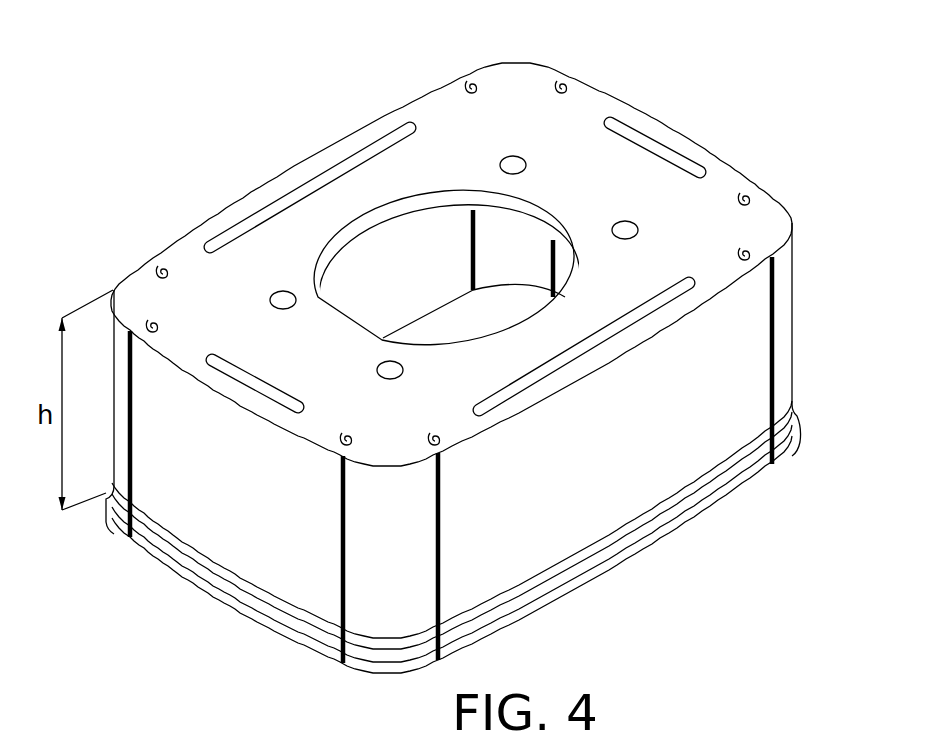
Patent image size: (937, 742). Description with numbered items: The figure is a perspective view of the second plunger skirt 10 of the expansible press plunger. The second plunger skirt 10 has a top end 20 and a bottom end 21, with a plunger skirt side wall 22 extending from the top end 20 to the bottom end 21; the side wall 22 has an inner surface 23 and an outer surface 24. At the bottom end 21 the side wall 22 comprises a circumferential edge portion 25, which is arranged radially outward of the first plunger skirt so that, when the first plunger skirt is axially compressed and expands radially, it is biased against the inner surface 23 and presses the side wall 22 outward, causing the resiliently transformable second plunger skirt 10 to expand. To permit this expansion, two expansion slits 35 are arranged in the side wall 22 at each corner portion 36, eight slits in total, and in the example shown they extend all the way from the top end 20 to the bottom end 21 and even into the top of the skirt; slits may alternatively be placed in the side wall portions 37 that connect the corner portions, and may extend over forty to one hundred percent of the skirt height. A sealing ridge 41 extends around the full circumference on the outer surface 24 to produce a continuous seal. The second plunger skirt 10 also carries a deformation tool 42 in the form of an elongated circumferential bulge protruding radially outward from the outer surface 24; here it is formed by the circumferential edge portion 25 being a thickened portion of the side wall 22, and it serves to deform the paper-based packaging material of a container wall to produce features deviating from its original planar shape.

The second plunger skirt 10 is at (790, 95).
The top end 20 is at (513, 110).
The bottom end 21 is at (720, 512).
The plunger skirt side wall 22 is at (715, 380).
The inner surface 23 is at (390, 267).
The outer surface 24 is at (832, 360).
The circumferential edge portion 25 is at (595, 590).
The expansion slits 35 is at (342, 560).
The corner portion 36 is at (385, 587).
The side wall portions 37 is at (235, 525).
The sealing ridge 41 is at (795, 407).
The deformation tool 42 is at (755, 487).